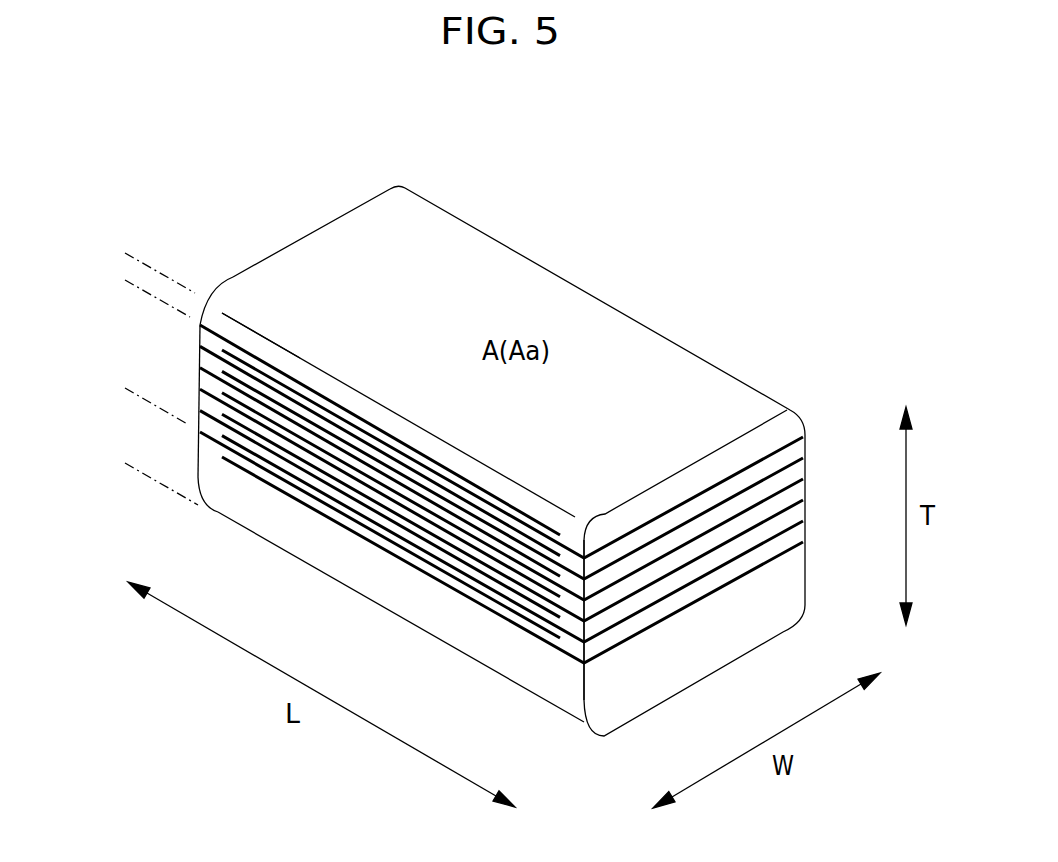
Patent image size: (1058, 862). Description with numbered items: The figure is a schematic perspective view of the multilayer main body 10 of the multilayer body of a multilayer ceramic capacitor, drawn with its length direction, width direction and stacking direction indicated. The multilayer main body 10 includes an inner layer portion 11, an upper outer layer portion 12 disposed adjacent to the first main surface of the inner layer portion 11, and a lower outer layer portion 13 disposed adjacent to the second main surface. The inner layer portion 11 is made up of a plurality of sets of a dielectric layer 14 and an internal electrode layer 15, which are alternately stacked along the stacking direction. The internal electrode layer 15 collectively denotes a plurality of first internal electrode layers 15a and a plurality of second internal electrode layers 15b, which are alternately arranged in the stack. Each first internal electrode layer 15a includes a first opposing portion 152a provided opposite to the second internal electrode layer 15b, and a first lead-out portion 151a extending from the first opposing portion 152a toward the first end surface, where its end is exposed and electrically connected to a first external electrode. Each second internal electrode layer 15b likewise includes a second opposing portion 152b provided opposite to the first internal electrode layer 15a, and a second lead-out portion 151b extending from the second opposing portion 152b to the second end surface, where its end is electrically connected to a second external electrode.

The multilayer main body 10 is at (583, 224).
The inner layer portion 11 is at (120, 387).
The upper outer layer portion 12 is at (120, 278).
The lower outer layer portion 13 is at (120, 387).
The dielectric layer 14 is at (547, 543).
The internal electrode layer 15 is at (517, 414).
The first internal electrode layer 15a is at (367, 184).
The second internal electrode layer 15b is at (770, 287).
The first lead-out portion 151a is at (217, 333).
The first opposing portion 152a is at (253, 353).
The second lead-out portion 151b is at (603, 512).
The second opposing portion 152b is at (585, 558).